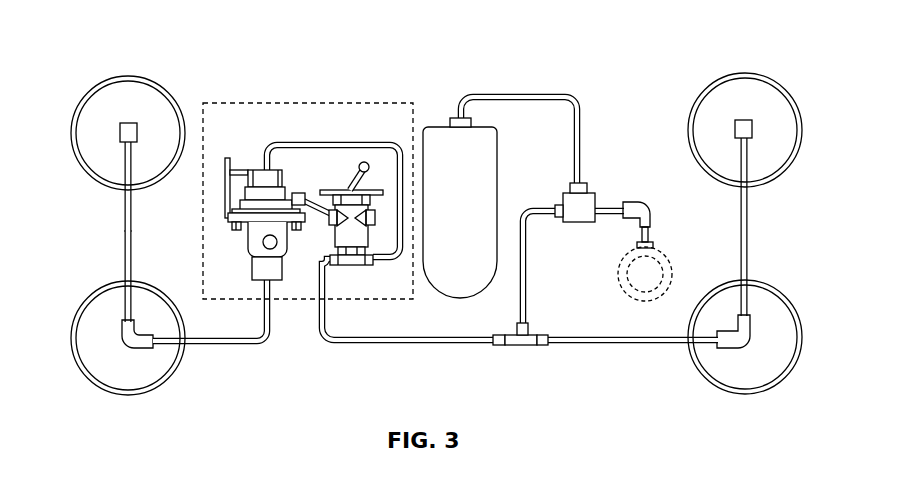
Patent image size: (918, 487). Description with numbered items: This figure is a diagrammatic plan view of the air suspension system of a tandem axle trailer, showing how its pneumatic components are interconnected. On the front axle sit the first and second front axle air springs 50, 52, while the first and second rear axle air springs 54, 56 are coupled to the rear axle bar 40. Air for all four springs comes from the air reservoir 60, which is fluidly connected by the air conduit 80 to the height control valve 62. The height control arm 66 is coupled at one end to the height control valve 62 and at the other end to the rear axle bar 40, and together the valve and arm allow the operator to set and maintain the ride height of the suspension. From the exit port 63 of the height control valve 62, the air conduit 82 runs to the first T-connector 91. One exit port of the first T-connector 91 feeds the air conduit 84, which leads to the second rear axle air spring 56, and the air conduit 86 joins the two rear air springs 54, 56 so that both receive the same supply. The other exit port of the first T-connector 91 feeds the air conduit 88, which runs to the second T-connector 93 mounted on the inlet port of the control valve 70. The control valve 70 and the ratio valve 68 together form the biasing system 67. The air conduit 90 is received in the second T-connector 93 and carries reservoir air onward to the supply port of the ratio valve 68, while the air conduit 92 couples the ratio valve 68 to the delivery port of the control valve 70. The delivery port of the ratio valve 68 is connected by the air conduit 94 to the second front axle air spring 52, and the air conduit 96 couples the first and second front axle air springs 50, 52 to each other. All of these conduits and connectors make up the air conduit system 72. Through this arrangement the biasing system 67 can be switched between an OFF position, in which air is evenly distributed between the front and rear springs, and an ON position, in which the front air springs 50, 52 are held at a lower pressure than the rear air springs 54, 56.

The rear axle bar 40 is at (673, 267).
The first front axle air spring 50 is at (120, 100).
The second front axle air spring 52 is at (128, 378).
The first rear axle air spring 54 is at (742, 98).
The second rear axle air spring 56 is at (750, 375).
The air reservoir 60 is at (487, 158).
The height control valve 62 is at (588, 199).
The exit port 63 is at (560, 200).
The height control arm 66 is at (625, 188).
The biasing system 67 is at (347, 301).
The ratio valve 68 is at (295, 255).
The control valve 70 is at (312, 210).
The air conduit system 72 is at (123, 219).
The air conduit 80 is at (530, 95).
The air conduit 82 is at (528, 282).
The air conduit 84 is at (640, 346).
The air conduit 86 is at (755, 226).
The air conduit 88 is at (408, 345).
The air conduit 90 is at (308, 135).
The first T-connector 91 is at (520, 347).
The air conduit 92 is at (316, 205).
The second T-connector 93 is at (362, 266).
The air conduit 94 is at (227, 343).
The air conduit 96 is at (122, 245).